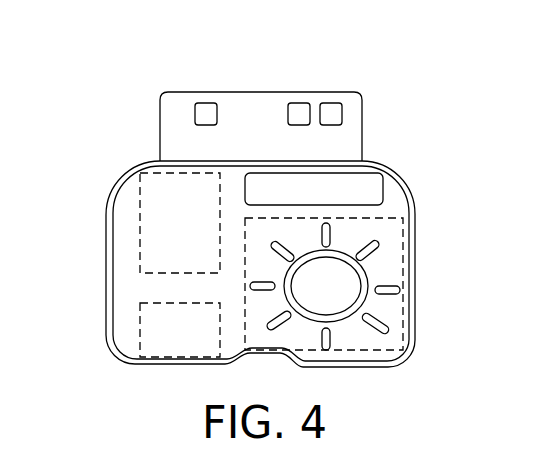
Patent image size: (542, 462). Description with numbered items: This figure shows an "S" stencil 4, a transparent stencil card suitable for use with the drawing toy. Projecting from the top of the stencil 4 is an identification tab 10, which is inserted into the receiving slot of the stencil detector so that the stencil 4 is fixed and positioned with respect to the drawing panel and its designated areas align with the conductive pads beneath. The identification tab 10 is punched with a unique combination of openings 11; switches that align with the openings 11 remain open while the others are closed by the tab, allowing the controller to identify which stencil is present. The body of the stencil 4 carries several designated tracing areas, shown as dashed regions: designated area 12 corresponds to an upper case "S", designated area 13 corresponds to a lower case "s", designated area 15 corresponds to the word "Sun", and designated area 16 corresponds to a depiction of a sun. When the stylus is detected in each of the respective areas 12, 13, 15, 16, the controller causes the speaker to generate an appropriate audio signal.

The stencil 4 is at (107, 208).
The identification tab 10 is at (165, 122).
The openings 11 is at (326, 101).
The designated tracing area 12 is at (140, 237).
The designated tracing area 13 is at (140, 322).
The designated tracing area 15 is at (402, 193).
The designated tracing area 16 is at (403, 273).